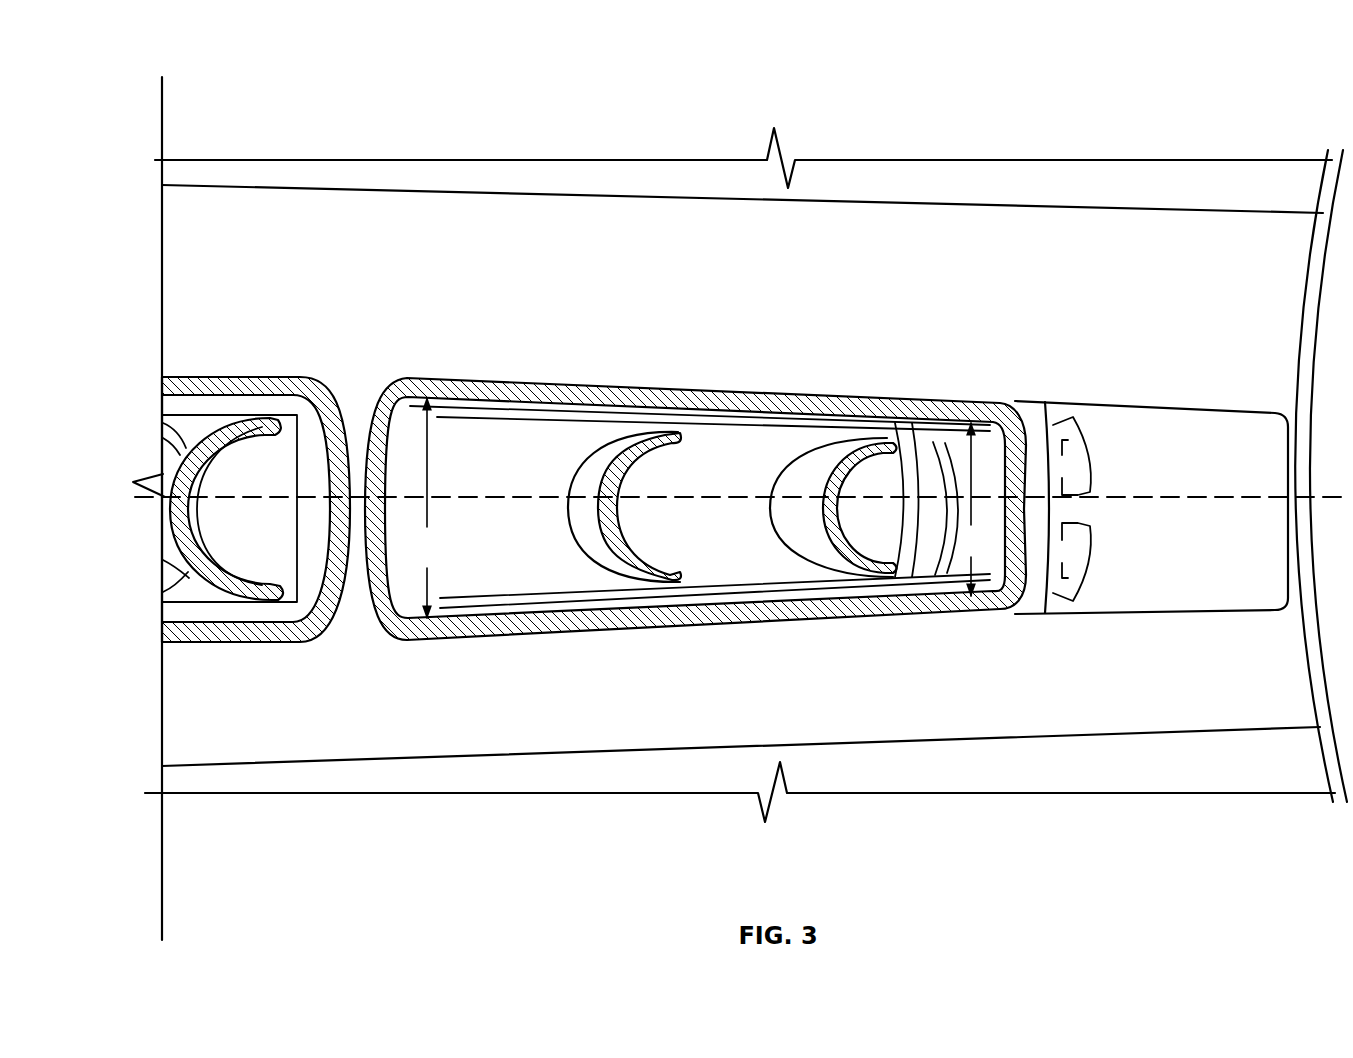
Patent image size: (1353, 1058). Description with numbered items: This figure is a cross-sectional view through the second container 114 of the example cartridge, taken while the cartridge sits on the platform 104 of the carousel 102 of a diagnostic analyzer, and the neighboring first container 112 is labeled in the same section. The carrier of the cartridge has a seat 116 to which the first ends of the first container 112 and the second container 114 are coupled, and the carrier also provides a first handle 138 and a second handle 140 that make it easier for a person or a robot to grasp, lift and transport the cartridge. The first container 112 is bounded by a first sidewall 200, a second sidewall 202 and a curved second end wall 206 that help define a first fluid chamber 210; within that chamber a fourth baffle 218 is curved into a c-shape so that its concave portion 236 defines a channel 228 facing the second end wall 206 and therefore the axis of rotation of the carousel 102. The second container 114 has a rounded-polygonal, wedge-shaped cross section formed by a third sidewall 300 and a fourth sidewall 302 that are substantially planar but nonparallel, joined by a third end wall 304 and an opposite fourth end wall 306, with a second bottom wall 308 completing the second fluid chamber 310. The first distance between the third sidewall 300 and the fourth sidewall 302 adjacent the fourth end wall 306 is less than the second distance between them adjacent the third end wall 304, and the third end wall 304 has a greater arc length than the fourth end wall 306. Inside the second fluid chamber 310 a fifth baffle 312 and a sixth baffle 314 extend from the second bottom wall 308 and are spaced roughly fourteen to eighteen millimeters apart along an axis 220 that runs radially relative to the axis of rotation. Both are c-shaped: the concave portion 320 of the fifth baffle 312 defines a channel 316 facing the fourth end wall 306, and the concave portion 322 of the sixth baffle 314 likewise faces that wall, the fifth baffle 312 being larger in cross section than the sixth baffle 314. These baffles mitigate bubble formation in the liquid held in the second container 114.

The carousel 102 is at (1328, 178).
The platform 104 is at (722, 323).
The first container 112 is at (204, 735).
The second container 114 is at (636, 648).
The seat 116 is at (368, 403).
The first handle 138 is at (860, 483).
The second handle 140 is at (1222, 435).
The first sidewall 200 is at (247, 377).
The second sidewall 202 is at (277, 634).
The second end wall 206 is at (325, 432).
The first fluid chamber 210 is at (183, 428).
The fourth baffle 218 is at (212, 578).
The axis 220 is at (483, 497).
The channel 228 is at (246, 470).
The concave portion 236 is at (202, 535).
The third sidewall 300 is at (831, 402).
The fourth sidewall 302 is at (530, 625).
The third end wall 304 is at (400, 608).
The fourth end wall 306 is at (1003, 598).
The second bottom wall 308 is at (525, 563).
The second fluid chamber 310 is at (746, 458).
The fifth baffle 312 is at (605, 455).
The sixth baffle 314 is at (807, 548).
The channel 316 is at (643, 472).
The concave portion 320 is at (618, 535).
The concave portion 322 is at (837, 523).